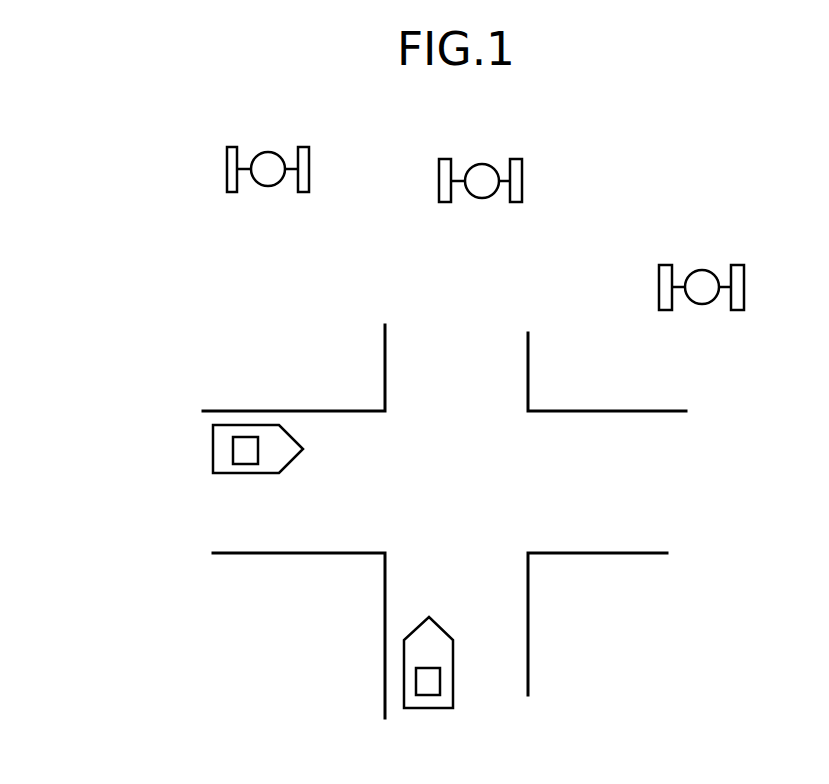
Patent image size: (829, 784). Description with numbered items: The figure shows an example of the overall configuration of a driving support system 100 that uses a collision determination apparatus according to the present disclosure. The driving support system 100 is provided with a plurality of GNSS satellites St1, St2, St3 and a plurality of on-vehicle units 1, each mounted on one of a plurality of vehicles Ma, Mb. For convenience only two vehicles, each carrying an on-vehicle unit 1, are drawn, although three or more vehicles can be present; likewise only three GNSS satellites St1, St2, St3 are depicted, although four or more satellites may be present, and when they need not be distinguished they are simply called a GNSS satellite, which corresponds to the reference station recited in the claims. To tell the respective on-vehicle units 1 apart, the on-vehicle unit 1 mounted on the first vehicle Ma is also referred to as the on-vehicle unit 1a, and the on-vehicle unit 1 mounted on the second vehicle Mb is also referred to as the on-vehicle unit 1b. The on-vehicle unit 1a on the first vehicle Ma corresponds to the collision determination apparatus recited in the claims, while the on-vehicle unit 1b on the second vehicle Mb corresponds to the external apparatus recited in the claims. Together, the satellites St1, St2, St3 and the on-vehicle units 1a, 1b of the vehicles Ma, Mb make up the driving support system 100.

The driving support system 100 is at (104, 157).
The GNSS satellite St1 is at (482, 164).
The GNSS satellite St2 is at (702, 270).
The GNSS satellite St3 is at (268, 152).
The first vehicle Ma is at (244, 480).
The second vehicle Mb is at (387, 690).
The on-vehicle unit 1 is at (264, 486).
The on-vehicle unit 1a is at (249, 464).
The on-vehicle unit 1b is at (416, 683).